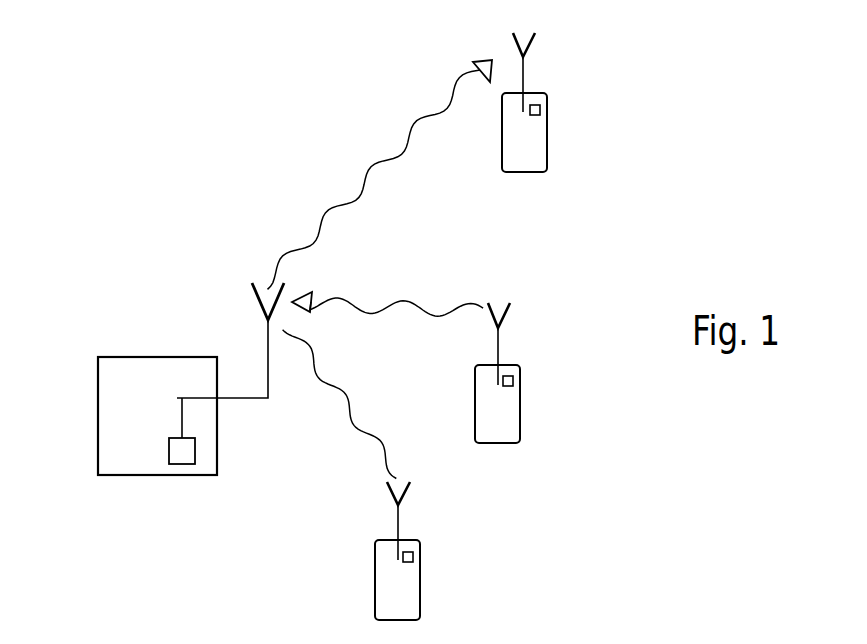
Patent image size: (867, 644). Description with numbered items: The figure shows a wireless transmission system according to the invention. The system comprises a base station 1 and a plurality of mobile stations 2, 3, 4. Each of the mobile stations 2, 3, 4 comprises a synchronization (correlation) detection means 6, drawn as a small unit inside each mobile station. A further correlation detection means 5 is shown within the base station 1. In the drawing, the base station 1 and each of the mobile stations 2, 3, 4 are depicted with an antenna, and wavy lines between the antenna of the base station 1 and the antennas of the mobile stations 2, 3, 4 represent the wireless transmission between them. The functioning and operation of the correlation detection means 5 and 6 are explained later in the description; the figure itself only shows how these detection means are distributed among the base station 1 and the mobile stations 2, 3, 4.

The base station 1 is at (98, 422).
The mobile station 2 is at (547, 157).
The mobile station 3 is at (520, 425).
The mobile station 4 is at (420, 600).
The correlation detection means 5 is at (195, 453).
The synchronization (correlation) detection means 6 is at (540, 110).